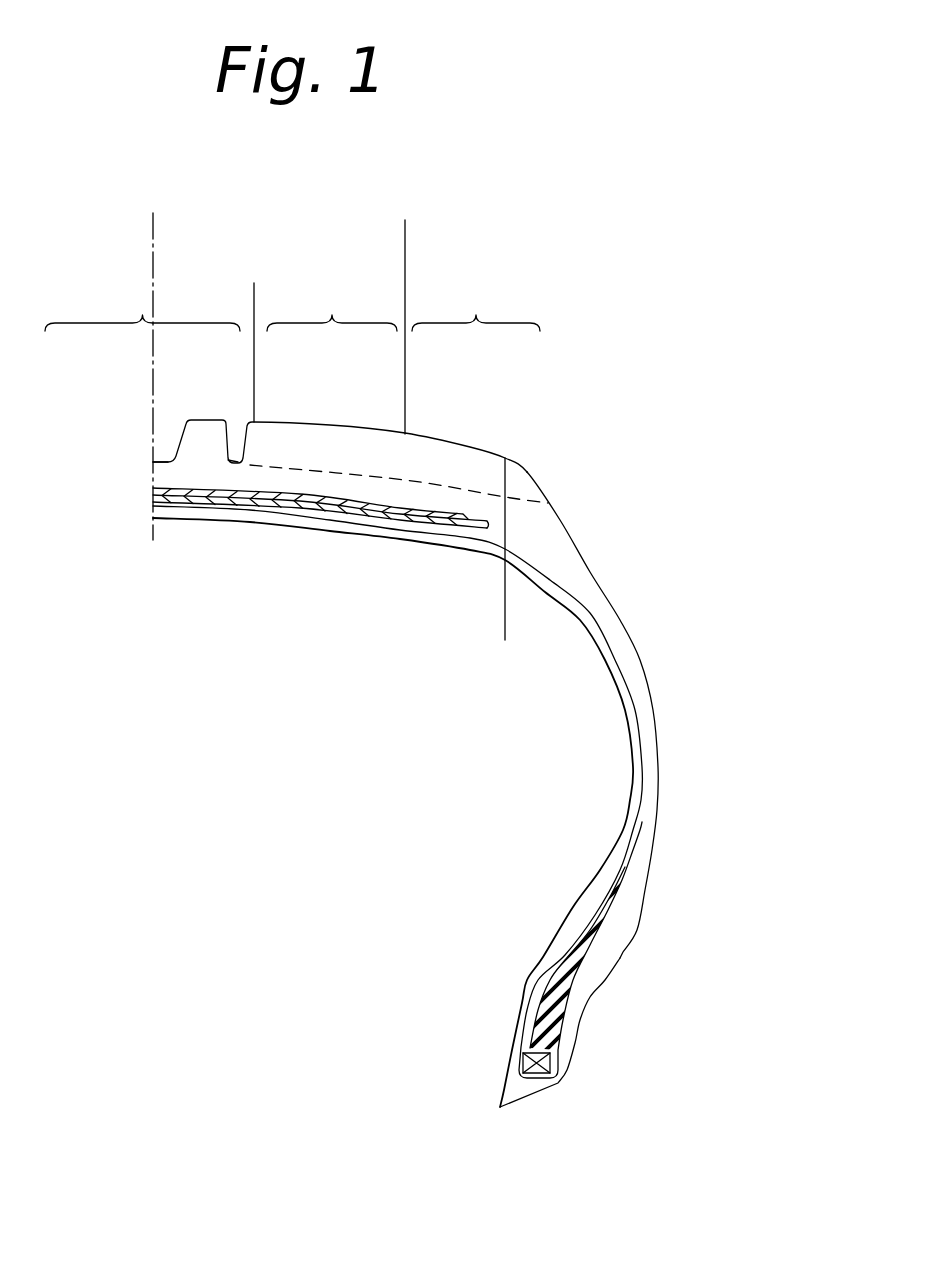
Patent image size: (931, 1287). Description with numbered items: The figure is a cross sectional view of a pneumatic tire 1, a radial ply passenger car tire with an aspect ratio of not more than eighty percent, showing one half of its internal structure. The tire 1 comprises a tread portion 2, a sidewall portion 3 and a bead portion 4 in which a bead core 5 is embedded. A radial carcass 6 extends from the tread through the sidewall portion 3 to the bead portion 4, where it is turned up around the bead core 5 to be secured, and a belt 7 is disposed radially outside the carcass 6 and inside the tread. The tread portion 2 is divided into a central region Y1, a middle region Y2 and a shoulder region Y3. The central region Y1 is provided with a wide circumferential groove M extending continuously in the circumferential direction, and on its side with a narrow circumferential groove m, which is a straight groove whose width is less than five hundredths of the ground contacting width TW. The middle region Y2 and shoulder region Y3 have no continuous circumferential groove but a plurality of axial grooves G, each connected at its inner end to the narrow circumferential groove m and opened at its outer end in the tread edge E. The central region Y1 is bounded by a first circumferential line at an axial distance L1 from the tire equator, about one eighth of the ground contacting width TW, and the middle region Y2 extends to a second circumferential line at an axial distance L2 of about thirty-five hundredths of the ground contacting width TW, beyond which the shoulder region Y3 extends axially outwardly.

The pneumatic tire 1 is at (613, 420).
The tread portion 2 is at (420, 458).
The sidewall portion 3 is at (652, 663).
The bead portion 4 is at (600, 1007).
The bead core 5 is at (558, 1062).
The radial carcass 6 is at (640, 790).
The belt 7 is at (417, 517).
The tread edge E is at (528, 457).
The axial groove G is at (303, 468).
The wide circumferential groove M is at (163, 443).
The narrow circumferential groove m is at (236, 440).
The central region Y1 is at (142, 306).
The middle region Y2 is at (332, 305).
The shoulder region Y3 is at (476, 305).
The axial distance L1 is at (154, 290).
The axial distance L2 is at (154, 230).
The ground contacting width TW is at (505, 631).